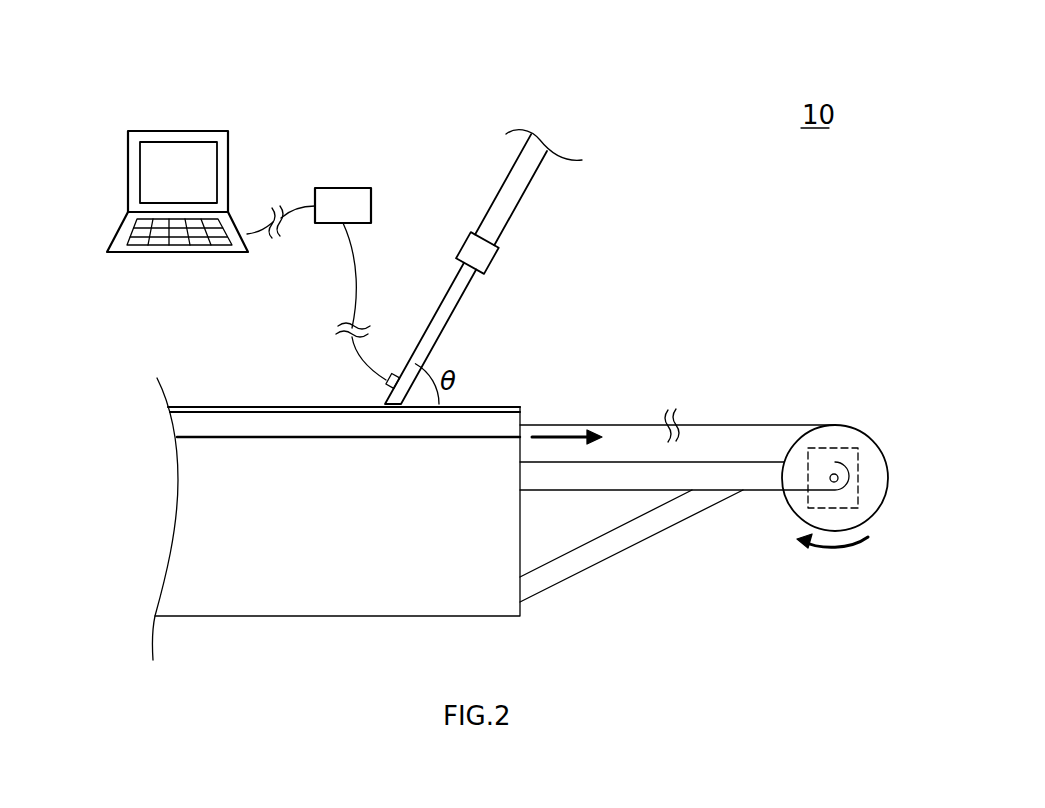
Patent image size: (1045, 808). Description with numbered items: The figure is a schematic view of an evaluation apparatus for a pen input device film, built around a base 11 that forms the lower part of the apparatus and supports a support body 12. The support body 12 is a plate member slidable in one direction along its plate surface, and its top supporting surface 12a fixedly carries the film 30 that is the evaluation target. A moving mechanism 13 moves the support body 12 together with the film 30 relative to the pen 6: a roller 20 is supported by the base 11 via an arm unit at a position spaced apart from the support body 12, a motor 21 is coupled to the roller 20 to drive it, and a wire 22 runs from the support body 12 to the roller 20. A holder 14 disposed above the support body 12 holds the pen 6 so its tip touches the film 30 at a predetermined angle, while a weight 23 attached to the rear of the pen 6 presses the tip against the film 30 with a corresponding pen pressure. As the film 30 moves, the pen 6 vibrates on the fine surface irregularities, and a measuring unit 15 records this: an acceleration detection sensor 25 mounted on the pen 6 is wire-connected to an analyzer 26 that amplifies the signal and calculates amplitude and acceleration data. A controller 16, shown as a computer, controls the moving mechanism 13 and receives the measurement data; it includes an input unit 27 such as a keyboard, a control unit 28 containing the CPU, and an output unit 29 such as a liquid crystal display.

The pen 6 is at (455, 312).
The base 11 is at (378, 484).
The support body 12 is at (537, 413).
The supporting surface 12a is at (490, 407).
The moving mechanism 13 is at (732, 443).
The holder 14 is at (527, 205).
The measuring unit 15 is at (441, 254).
The controller 16 is at (145, 189).
The roller 20 is at (873, 447).
The motor 21 is at (858, 487).
The wire 22 is at (740, 423).
The weight 23 is at (493, 267).
The acceleration detection sensor 25 is at (390, 372).
The analyzer 26 is at (371, 205).
The input unit 27 is at (150, 253).
The control unit 28 is at (122, 223).
The output unit 29 is at (128, 150).
The pen input device film 30 is at (242, 404).